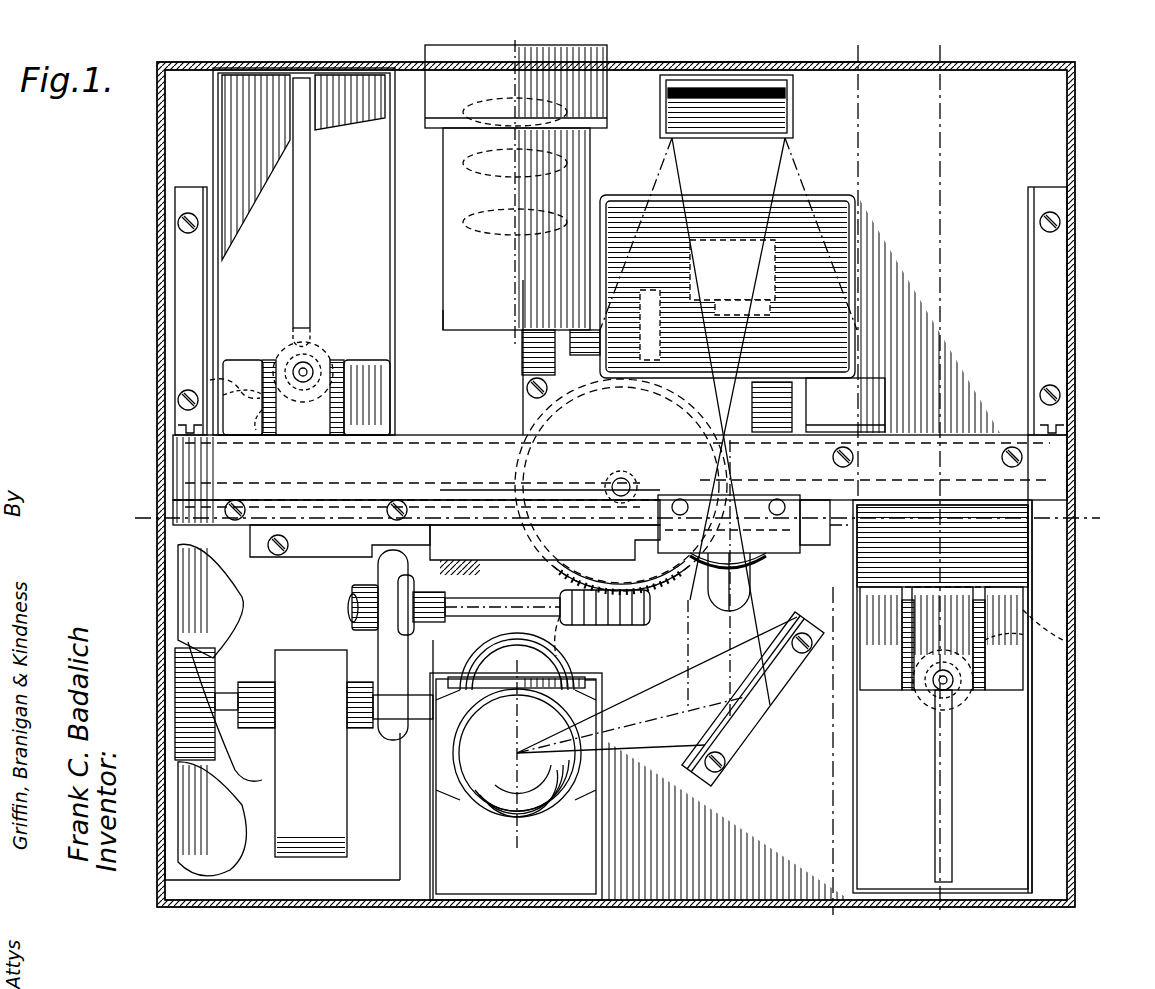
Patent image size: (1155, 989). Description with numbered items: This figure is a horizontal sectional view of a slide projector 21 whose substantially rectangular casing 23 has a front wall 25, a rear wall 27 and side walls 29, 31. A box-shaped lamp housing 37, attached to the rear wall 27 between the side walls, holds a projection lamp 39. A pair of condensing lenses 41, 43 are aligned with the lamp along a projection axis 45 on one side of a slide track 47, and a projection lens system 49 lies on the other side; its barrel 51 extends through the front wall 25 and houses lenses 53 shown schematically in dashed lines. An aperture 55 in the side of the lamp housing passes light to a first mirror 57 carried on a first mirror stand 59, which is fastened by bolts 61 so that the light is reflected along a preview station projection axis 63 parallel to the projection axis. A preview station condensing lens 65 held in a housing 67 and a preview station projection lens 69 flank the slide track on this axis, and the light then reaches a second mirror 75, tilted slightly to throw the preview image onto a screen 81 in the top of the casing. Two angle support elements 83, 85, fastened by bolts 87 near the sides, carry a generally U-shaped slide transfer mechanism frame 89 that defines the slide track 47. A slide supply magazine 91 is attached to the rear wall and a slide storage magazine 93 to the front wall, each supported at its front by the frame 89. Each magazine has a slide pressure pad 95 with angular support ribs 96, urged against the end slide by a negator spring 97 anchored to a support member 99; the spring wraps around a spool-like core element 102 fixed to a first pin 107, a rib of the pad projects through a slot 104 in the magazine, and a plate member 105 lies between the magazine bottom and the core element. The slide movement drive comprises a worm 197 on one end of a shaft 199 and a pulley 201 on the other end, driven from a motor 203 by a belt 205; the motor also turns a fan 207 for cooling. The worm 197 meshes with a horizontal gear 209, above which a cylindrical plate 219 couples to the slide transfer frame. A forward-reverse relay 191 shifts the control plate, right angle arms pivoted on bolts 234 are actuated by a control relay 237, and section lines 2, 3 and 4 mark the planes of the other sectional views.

The slide projector 21 is at (1080, 115).
The casing 23 is at (1072, 668).
The front wall 25 is at (700, 62).
The rear wall 27 is at (552, 907).
The side wall 29 is at (170, 610).
The side wall 31 is at (1067, 598).
The lamp housing 37 is at (436, 858).
The projection lamp 39 is at (530, 812).
The condensing lens 41 is at (565, 665).
The condensing lens 43 is at (470, 560).
The projection axis 45 is at (522, 355).
The slide track 47 is at (621, 478).
The projection lens system 49 is at (443, 318).
The barrel 51 is at (443, 240).
The lenses 53 is at (455, 150).
The aperture 55 is at (590, 713).
The first mirror 57 is at (730, 740).
The first mirror stand 59 is at (760, 700).
The bolts 61 is at (804, 653).
The preview station projection axis 63 is at (709, 693).
The preview station condensing lens 65 is at (672, 560).
The housing 67 is at (790, 560).
The preview station projection lens 69 is at (740, 318).
The second mirror 75 is at (790, 122).
The screen 81 is at (820, 195).
The angle support element 83 is at (178, 335).
The angle support element 85 is at (1060, 275).
The bolts 87 is at (178, 223).
The slide transfer mechanism frame 89 is at (1060, 455).
The slide supply magazine 91 is at (1047, 705).
The slide storage magazine 93 is at (203, 268).
The slide pressure pads 95 is at (245, 365).
The angular support ribs 96 is at (268, 375).
The negator spring 97 is at (255, 420).
The support member 99 is at (228, 388).
The core element 102 is at (318, 340).
The slot 104 is at (310, 225).
The plate member 105 is at (386, 400).
The first pin 107 is at (313, 374).
The forward-reverse relay 191 is at (830, 372).
The worm 197 is at (602, 651).
The shaft 199 is at (530, 622).
The pulley 201 is at (375, 648).
The motor 203 is at (340, 795).
The belt 205 is at (412, 655).
The fan 207 is at (240, 605).
The gear 209 is at (610, 625).
The cylindrical plate 219 is at (712, 605).
The bolts 234 is at (527, 388).
The control relay 237 is at (590, 355).
The section line 2- 2 is at (940, 45).
The section line 3- 3 is at (858, 45).
The section line 4- 4 is at (135, 518).